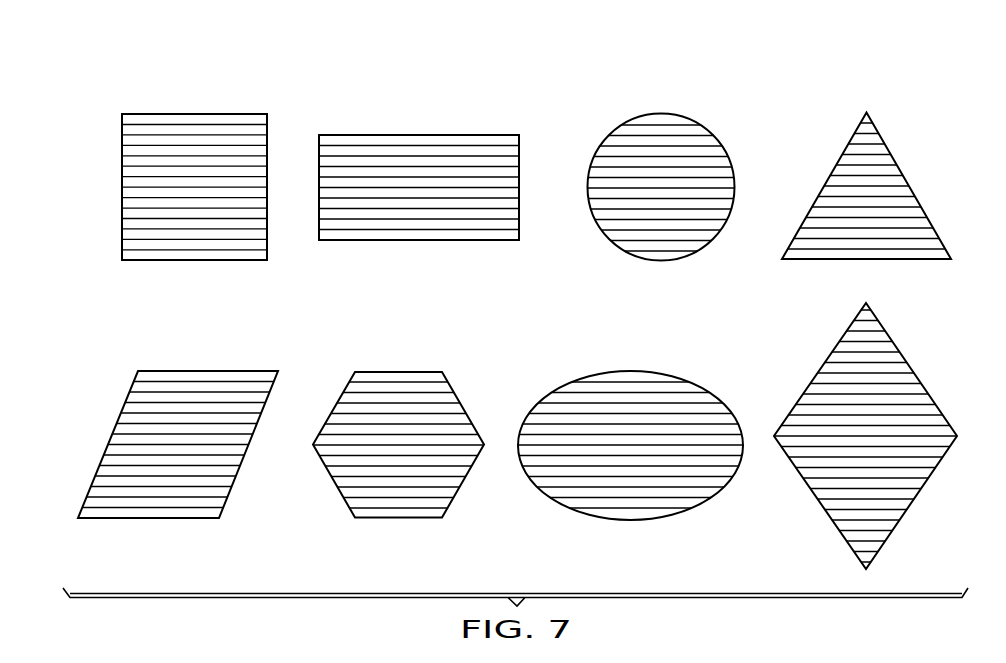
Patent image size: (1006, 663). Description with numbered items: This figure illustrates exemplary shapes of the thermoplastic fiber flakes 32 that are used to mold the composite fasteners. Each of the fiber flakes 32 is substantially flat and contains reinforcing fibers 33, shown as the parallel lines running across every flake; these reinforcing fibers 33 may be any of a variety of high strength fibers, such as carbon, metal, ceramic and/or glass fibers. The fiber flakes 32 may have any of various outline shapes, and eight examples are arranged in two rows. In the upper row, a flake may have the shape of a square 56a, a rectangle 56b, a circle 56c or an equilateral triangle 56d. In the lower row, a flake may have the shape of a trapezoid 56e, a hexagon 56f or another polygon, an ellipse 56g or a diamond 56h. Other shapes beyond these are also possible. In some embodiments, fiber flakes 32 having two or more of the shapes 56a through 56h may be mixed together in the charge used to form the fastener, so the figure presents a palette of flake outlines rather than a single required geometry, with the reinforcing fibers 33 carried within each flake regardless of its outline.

The fiber flakes 32 is at (518, 305).
The reinforcing fibers 33 is at (188, 130).
The square 56a is at (233, 113).
The rectangle 56b is at (485, 135).
The circle 56c is at (679, 113).
The equilateral triangle 56d is at (885, 140).
The trapezoid 56e is at (243, 373).
The hexagon 56f is at (405, 371).
The ellipse 56g is at (658, 372).
The diamond 56h is at (897, 350).